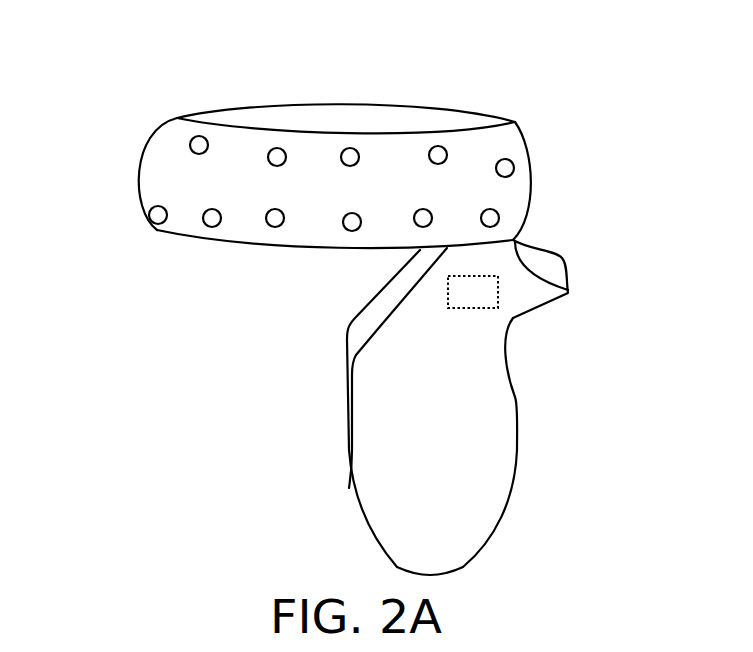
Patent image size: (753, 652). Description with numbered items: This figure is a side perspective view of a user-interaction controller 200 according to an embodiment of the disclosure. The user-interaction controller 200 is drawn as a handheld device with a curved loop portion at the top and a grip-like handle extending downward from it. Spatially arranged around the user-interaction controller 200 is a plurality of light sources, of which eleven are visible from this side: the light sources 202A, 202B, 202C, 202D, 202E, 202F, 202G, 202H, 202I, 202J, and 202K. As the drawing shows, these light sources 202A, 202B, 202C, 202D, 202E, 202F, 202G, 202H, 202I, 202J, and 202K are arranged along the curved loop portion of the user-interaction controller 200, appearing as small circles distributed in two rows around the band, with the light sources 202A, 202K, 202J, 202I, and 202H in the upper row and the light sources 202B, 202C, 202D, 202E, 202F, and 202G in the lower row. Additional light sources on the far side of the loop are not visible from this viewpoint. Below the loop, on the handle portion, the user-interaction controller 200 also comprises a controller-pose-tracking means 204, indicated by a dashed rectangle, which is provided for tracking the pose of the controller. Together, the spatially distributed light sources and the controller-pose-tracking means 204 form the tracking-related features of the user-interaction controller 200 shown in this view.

The user-interaction controller 200 is at (630, 70).
The light source 202A is at (199, 145).
The light source 202B is at (158, 215).
The light source 202C is at (212, 218).
The light source 202D is at (275, 218).
The light source 202E is at (352, 222).
The light source 202F is at (423, 218).
The light source 202G is at (490, 218).
The light source 202H is at (505, 168).
The light source 202I is at (438, 155).
The light source 202J is at (350, 157).
The light source 202K is at (277, 157).
The controller-pose-tracking means 204 is at (473, 297).